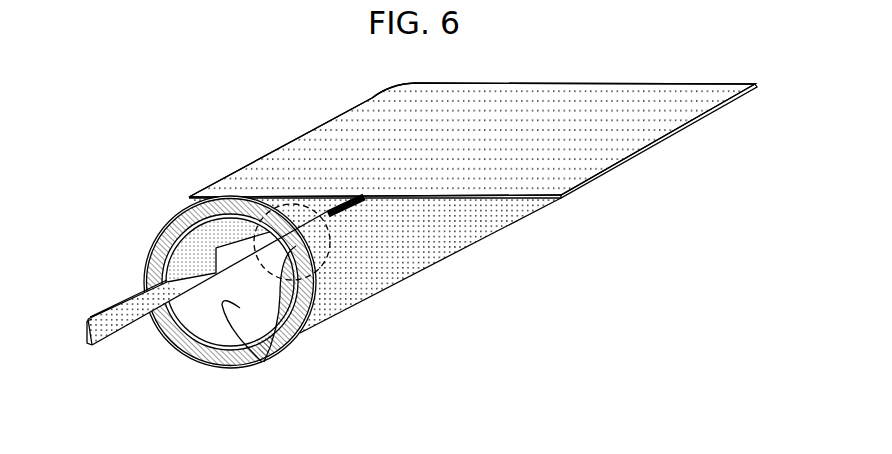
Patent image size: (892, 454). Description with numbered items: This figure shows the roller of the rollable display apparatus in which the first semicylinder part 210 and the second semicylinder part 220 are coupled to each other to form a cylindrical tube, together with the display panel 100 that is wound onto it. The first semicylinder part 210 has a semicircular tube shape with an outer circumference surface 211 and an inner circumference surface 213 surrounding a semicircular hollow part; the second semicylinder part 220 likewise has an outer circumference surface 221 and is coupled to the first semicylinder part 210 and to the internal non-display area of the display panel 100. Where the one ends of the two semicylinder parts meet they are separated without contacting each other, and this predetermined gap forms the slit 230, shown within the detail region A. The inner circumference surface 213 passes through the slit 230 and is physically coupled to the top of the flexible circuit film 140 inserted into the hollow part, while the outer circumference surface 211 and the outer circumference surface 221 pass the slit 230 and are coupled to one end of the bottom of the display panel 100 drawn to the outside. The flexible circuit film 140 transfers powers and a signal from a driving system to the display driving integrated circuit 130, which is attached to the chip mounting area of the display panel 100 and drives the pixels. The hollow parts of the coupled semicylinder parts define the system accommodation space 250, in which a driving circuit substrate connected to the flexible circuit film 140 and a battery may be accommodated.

The display panel 100 is at (597, 179).
The display driving integrated circuit 130 is at (355, 208).
The flexible circuit film 140 is at (113, 334).
The first semicylinder part 210 is at (176, 219).
The outer circumference surface 211 is at (158, 240).
The inner circumference surface 213 is at (192, 205).
The second semicylinder part 220 is at (227, 370).
The outer circumference surface 221 is at (190, 350).
The slit 230 is at (313, 318).
The system accommodation space 250 is at (262, 362).
The detail region A is at (322, 266).